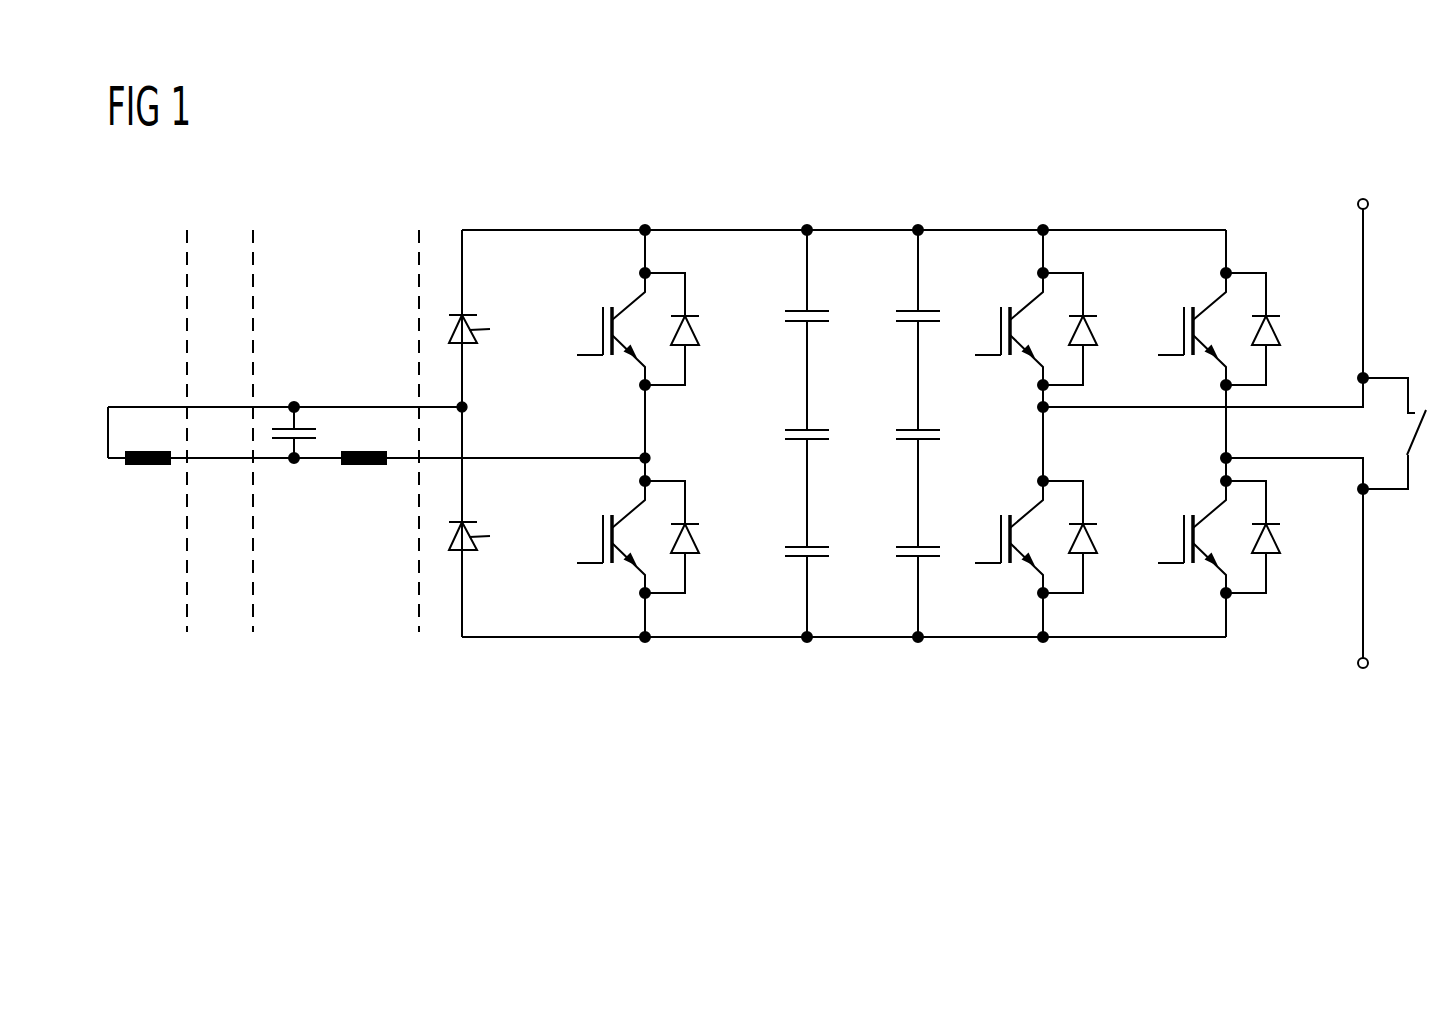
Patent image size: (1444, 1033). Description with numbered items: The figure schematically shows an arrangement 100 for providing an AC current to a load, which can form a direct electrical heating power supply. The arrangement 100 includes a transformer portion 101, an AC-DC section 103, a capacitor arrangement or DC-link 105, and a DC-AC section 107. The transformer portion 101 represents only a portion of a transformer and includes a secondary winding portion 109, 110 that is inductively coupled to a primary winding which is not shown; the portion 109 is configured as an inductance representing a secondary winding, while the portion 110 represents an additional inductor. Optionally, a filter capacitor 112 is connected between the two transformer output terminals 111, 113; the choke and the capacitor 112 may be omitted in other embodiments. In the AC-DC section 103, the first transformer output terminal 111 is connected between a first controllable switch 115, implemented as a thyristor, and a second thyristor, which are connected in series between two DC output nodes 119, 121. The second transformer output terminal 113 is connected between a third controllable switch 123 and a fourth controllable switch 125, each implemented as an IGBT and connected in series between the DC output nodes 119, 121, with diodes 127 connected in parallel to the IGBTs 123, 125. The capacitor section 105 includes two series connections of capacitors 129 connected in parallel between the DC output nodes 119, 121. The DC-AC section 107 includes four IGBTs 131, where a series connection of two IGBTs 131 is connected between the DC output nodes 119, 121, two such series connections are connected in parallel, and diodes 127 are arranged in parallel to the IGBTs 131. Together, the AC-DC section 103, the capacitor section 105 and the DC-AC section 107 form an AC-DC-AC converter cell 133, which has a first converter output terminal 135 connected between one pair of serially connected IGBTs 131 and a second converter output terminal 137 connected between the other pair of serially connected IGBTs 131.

The arrangement 100 is at (1114, 156).
The transformer portion 101 is at (108, 714).
The AC-DC section 103 is at (450, 720).
The capacitor arrangement or DC-link 105 is at (785, 720).
The DC-AC section 107 is at (975, 720).
The secondary winding portion 109 is at (144, 466).
The secondary winding portion 110 is at (360, 466).
The transformer output terminal 111 is at (470, 408).
The capacitor 112 is at (323, 435).
The transformer output terminal 113 is at (653, 460).
The first controllable switch 115 is at (482, 318).
The DC output node 119 is at (807, 227).
The DC output node 121 is at (805, 643).
The third controllable switch 123 is at (600, 305).
The fourth controllable switch 125 is at (600, 567).
The diode 127 is at (700, 325).
The capacitor 129 is at (829, 322).
The transistor (IGBT) 131 is at (997, 305).
The AC-DC-AC converter cell 133 is at (448, 791).
The first converter output terminal 135 is at (1358, 204).
The second converter output terminal 137 is at (1358, 664).